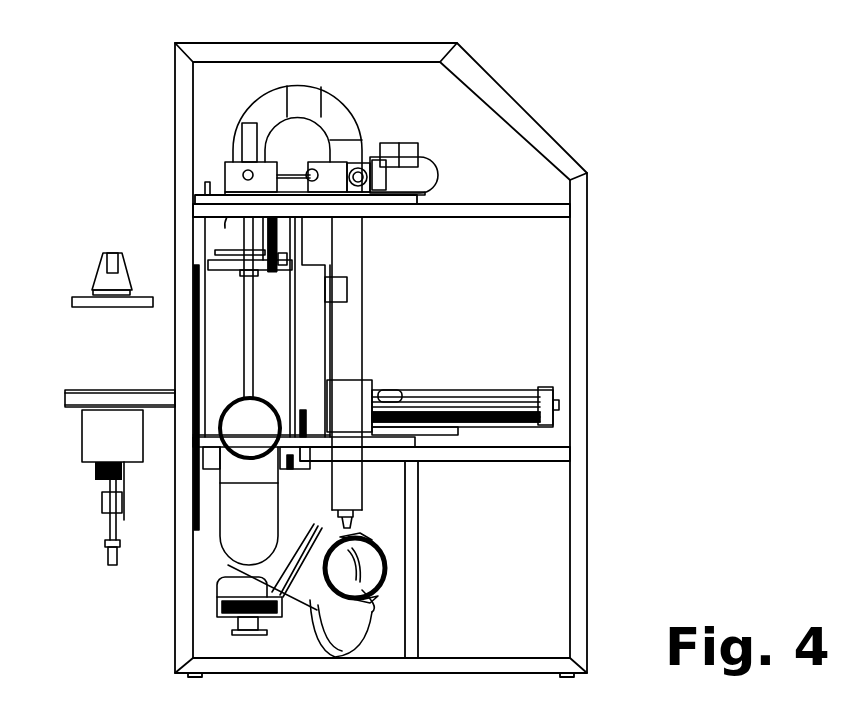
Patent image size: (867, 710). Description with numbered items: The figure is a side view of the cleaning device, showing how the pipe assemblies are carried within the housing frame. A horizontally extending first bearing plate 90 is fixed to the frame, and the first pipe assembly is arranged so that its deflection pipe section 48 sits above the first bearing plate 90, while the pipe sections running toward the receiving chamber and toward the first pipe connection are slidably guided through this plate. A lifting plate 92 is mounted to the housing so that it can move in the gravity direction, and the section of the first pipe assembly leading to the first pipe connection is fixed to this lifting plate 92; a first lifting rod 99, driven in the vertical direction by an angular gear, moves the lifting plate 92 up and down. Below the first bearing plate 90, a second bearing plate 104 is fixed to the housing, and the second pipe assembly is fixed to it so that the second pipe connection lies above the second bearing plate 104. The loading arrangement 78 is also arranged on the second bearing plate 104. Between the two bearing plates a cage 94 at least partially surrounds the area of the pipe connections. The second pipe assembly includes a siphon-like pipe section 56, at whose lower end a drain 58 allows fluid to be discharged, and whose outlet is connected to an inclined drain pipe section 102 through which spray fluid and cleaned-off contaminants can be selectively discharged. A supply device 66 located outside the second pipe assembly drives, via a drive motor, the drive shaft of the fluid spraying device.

The deflection pipe section 48 is at (297, 95).
The siphon-like pipe section 56 is at (242, 533).
The drain 58 is at (383, 593).
The supply device 66 is at (217, 620).
The loading arrangement 78 is at (502, 372).
The first bearing plate 90 is at (497, 210).
The lifting plate 92 is at (208, 260).
The cage 94 is at (248, 347).
The first lifting rod 99 is at (227, 230).
The inclined drain pipe section 102 is at (345, 620).
The second bearing plate 104 is at (520, 453).